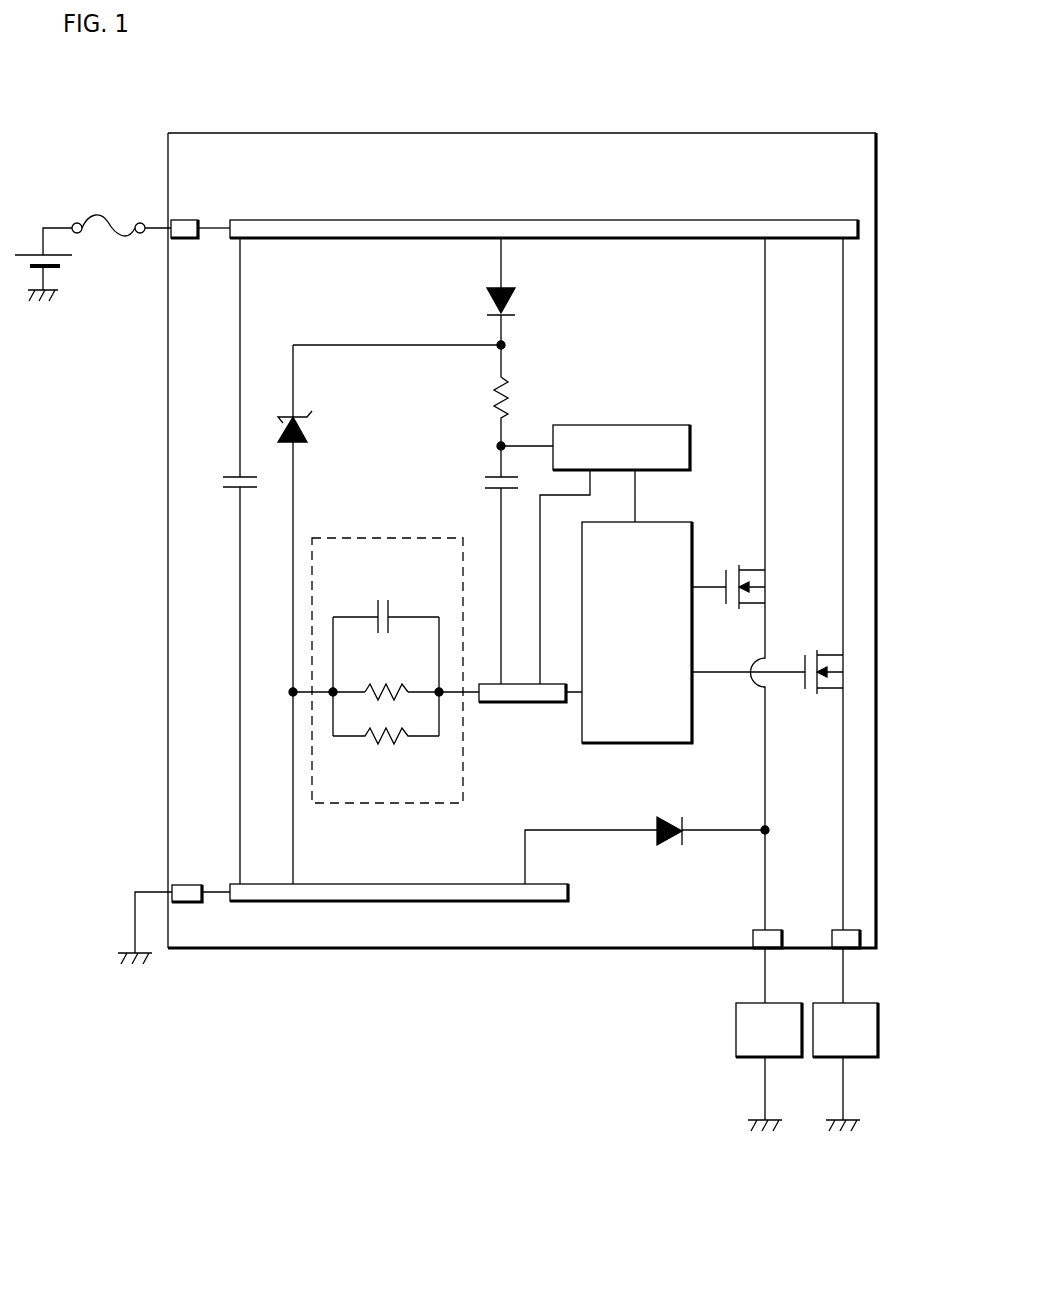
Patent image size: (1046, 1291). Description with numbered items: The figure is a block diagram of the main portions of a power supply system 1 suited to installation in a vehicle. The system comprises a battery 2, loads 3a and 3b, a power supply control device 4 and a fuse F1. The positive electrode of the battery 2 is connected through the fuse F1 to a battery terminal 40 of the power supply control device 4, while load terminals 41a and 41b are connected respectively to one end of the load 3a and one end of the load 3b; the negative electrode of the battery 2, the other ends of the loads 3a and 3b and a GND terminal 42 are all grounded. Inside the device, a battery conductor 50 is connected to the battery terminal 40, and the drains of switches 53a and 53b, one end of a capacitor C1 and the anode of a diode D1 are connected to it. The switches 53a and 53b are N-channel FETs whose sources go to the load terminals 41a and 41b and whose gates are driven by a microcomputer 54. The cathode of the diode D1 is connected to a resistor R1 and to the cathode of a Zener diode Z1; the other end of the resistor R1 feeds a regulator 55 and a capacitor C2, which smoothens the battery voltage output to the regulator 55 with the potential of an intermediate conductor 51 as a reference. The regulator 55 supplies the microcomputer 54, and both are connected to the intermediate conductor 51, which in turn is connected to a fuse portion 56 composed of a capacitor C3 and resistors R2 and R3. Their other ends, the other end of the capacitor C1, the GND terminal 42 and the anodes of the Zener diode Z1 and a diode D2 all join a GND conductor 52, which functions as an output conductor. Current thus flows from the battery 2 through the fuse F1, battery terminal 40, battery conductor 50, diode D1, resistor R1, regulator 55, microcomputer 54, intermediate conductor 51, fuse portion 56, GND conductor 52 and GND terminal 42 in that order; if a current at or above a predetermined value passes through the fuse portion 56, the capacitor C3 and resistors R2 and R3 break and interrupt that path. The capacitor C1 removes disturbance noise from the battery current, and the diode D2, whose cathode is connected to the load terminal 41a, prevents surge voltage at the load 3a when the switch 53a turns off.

The power supply system 1 is at (862, 84).
The battery 2 is at (66, 262).
The load 3a is at (749, 1003).
The load 3b is at (827, 1003).
The power supply control device 4 is at (220, 133).
The battery terminal 40 is at (182, 220).
The load terminal 41a is at (758, 930).
The load terminal 41b is at (837, 930).
The GND terminal 42 is at (187, 885).
The battery conductor 50 is at (381, 220).
The intermediate conductor 51 is at (523, 702).
The GND conductor 52 is at (424, 884).
The switch 53a is at (733, 566).
The switch 53b is at (815, 650).
The microcomputer 54 is at (655, 522).
The regulator 55 is at (637, 425).
The fuse portion 56 is at (376, 645).
The fuse F1 is at (92, 207).
The capacitor C1 is at (234, 470).
The capacitor C2 is at (492, 474).
The capacitor C3 is at (383, 600).
The Zener diode Z1 is at (312, 429).
The diode D1 is at (520, 302).
The diode D2 is at (676, 815).
The resistor R1 is at (520, 401).
The resistor R2 is at (390, 684).
The resistor R3 is at (381, 744).